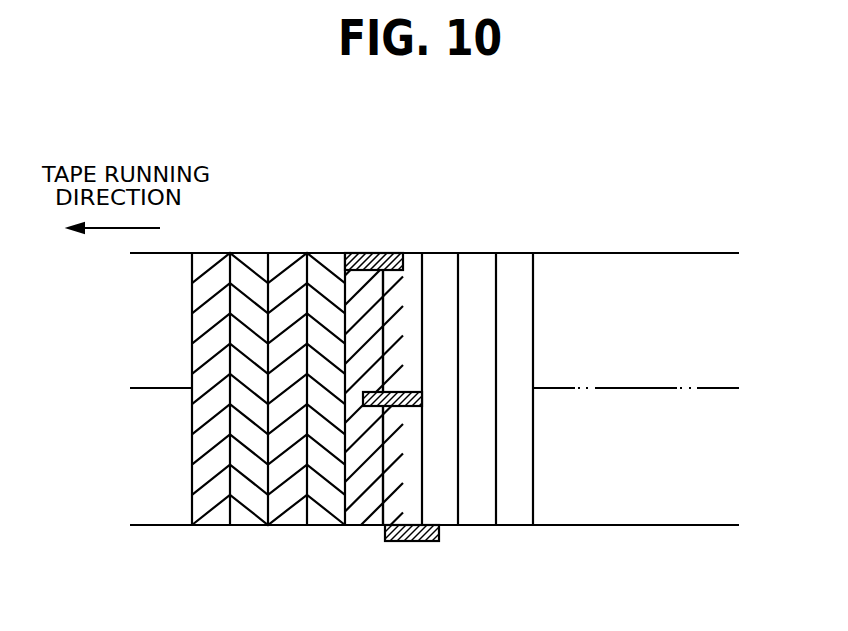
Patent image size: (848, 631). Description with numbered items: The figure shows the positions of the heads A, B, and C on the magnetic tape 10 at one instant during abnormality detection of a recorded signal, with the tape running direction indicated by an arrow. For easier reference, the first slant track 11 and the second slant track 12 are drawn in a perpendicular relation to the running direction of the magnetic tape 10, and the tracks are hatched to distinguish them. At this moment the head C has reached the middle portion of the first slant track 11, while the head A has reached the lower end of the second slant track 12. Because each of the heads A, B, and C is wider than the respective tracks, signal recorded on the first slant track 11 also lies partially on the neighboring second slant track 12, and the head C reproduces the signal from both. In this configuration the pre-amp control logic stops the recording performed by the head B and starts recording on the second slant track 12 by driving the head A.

The magnetic tape 10 is at (489, 231).
The first slant track 11 is at (210, 526).
The second slant track 12 is at (250, 526).
The head A is at (423, 542).
The head B is at (367, 253).
The head C is at (413, 392).